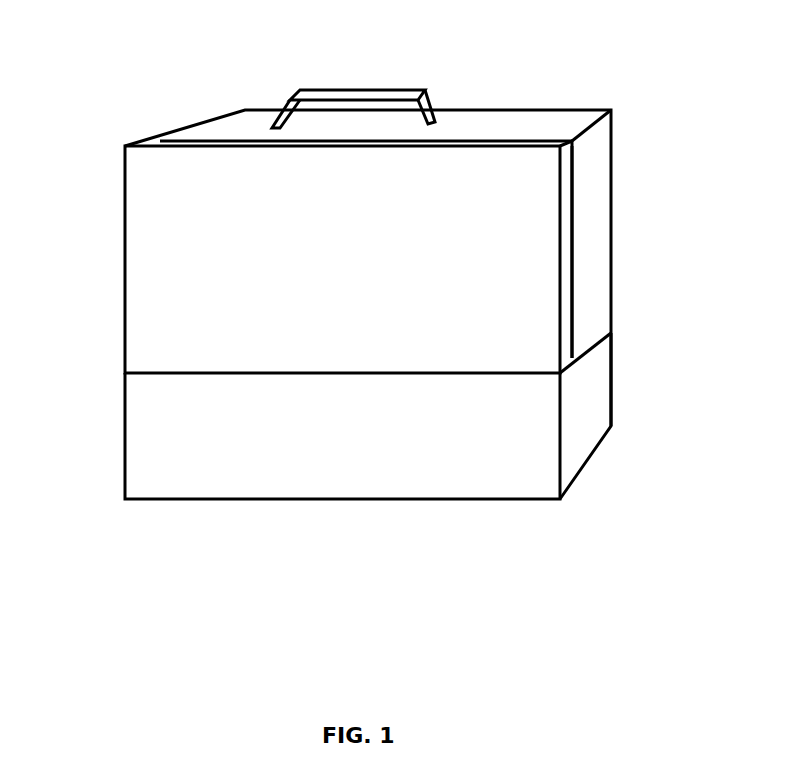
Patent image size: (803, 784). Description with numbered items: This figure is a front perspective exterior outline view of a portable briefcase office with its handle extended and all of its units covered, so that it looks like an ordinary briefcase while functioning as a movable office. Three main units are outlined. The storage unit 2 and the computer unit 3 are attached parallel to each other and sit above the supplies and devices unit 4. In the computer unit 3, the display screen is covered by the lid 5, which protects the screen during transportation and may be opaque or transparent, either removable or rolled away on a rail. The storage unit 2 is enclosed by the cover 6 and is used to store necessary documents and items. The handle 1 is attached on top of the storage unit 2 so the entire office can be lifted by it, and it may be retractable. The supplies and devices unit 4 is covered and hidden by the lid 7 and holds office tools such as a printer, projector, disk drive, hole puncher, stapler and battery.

The handle 1 is at (387, 95).
The storage unit 2 is at (594, 238).
The computer unit 3 is at (565, 300).
The supplies and devices unit 4 is at (587, 387).
The lid 5 is at (170, 275).
The cover 6 is at (611, 150).
The lid 7 is at (177, 435).